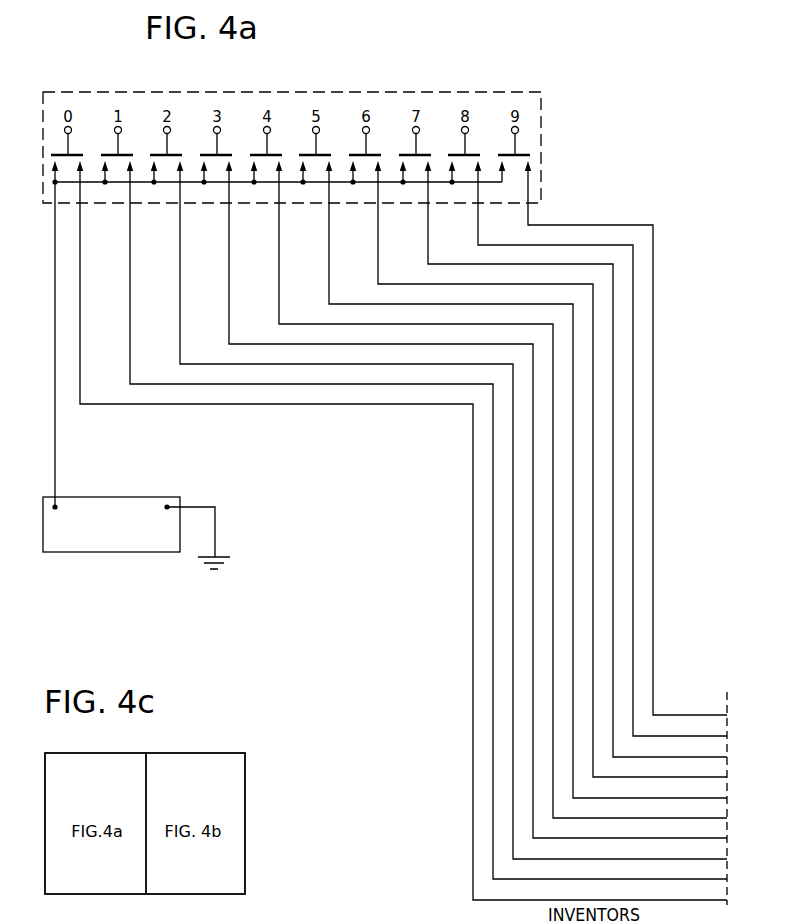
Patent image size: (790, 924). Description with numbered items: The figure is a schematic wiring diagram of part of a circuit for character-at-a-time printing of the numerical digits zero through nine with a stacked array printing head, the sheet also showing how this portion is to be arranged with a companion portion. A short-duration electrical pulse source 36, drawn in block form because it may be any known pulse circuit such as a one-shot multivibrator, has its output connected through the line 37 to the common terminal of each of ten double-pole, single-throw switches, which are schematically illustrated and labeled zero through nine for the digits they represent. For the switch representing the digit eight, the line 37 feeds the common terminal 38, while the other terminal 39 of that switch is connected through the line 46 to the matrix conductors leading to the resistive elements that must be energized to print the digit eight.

The short-duration electrical pulse source 36 is at (92, 552).
The line 37 is at (57, 415).
The common terminal 38 is at (450, 169).
The other terminal 39 is at (479, 164).
The line 46 is at (553, 242).